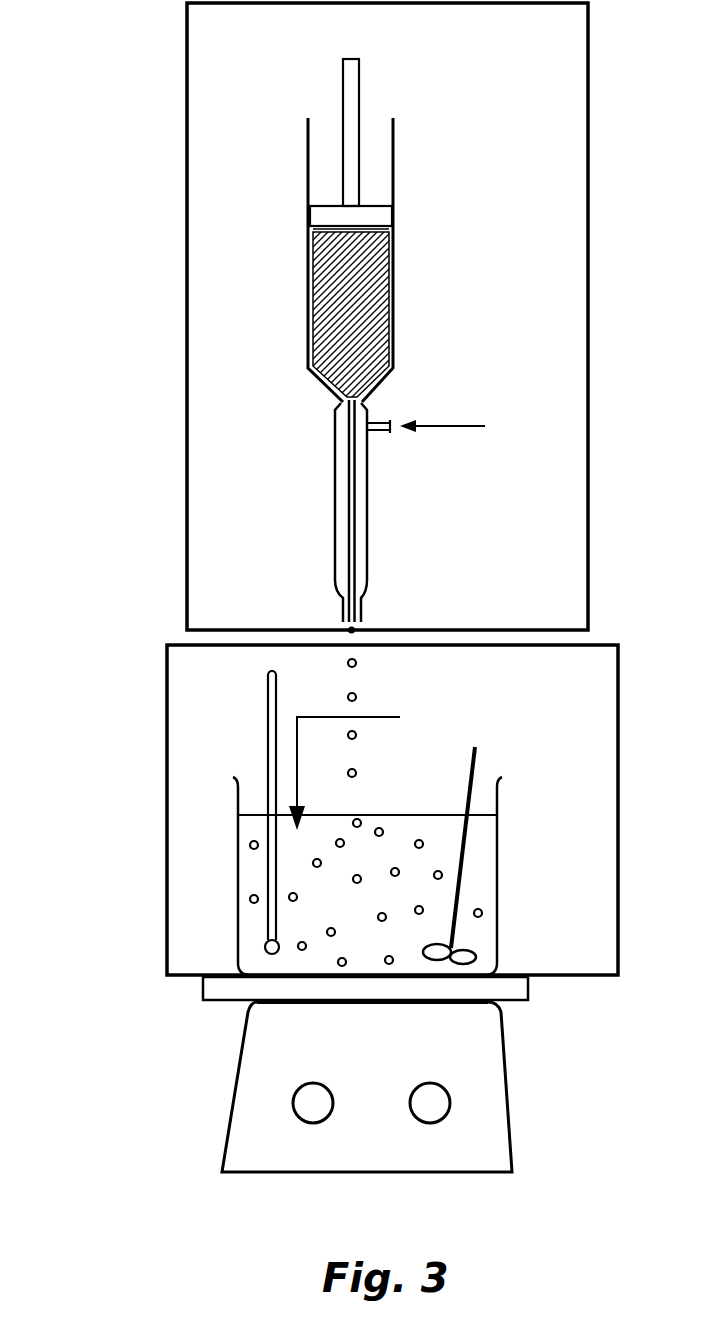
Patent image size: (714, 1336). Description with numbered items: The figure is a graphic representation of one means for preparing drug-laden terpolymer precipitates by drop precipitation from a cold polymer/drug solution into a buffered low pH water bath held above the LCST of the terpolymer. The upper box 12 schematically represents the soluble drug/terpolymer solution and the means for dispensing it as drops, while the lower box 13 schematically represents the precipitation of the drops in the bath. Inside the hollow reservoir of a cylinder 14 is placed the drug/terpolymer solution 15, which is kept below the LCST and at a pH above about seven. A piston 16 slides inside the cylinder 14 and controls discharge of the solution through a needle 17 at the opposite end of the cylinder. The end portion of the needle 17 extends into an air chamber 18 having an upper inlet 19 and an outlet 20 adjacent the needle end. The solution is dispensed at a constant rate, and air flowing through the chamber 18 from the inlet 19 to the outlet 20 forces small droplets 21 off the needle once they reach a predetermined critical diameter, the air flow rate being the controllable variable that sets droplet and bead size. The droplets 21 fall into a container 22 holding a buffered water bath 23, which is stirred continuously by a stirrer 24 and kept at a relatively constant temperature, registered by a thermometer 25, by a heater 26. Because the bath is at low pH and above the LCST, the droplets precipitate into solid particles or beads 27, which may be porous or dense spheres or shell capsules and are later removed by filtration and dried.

The box 12 is at (187, 343).
The box 13 is at (167, 818).
The cylinder 14 is at (397, 328).
The drug/terpolymer solution 15 is at (333, 292).
The piston 16 is at (362, 116).
The needle 17 is at (356, 583).
The air chamber 18 is at (369, 512).
The upper inlet 19 is at (390, 413).
The outlet 20 is at (343, 613).
The droplets 21 is at (357, 664).
The container 22 is at (237, 885).
The buffered water bath 23 is at (482, 857).
The stirrer 24 is at (478, 760).
The thermometer 25 is at (267, 730).
The heater 26 is at (502, 1092).
The beads 27 is at (484, 913).